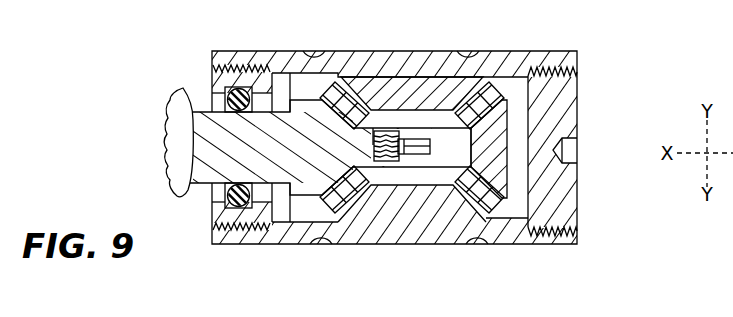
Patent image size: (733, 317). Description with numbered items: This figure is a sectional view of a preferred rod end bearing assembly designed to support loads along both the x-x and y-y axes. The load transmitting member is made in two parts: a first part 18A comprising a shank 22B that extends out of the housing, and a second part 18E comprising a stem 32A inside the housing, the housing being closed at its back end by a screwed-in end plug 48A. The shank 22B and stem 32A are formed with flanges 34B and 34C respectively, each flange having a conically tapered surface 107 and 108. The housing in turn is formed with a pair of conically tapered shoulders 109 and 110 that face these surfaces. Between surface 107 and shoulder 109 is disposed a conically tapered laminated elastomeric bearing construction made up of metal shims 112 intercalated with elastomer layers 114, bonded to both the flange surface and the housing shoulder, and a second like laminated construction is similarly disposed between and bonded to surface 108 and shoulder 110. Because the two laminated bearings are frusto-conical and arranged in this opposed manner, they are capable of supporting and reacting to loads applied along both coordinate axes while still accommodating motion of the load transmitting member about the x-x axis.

The load transmitting member first part 18A is at (182, 86).
The load transmitting member second part 18E is at (518, 111).
The shank 22B is at (210, 170).
The flange 34B is at (295, 103).
The flange 34C is at (493, 146).
The end plug 48A is at (572, 185).
The conically tapered surface 107 is at (386, 85).
The conically tapered surface 108 is at (498, 92).
The conically tapered shoulder 109 is at (345, 80).
The conically tapered shoulder 110 is at (479, 80).
The metal shims 112 is at (322, 198).
The elastomer layers 114 is at (370, 173).
The stem 32A is at (427, 167).